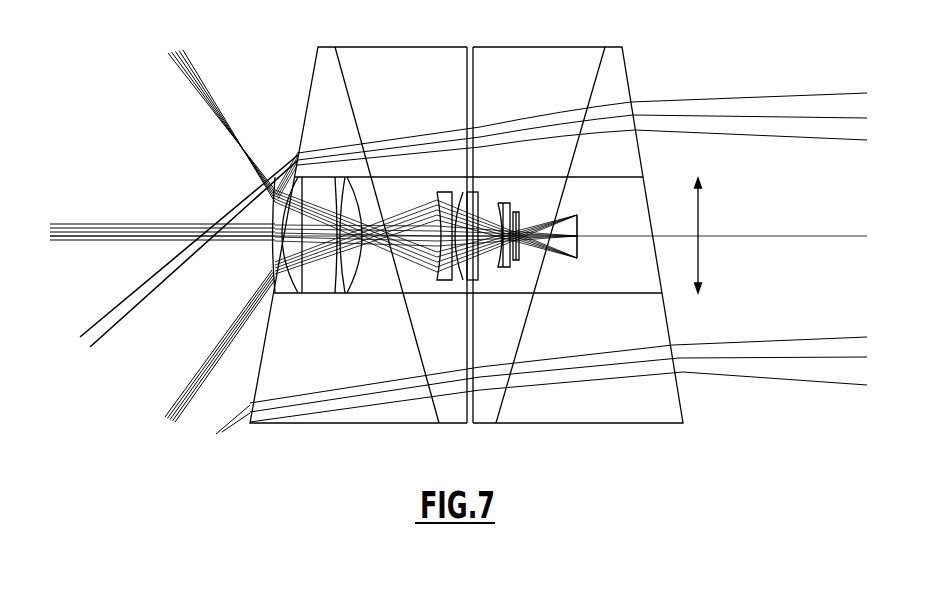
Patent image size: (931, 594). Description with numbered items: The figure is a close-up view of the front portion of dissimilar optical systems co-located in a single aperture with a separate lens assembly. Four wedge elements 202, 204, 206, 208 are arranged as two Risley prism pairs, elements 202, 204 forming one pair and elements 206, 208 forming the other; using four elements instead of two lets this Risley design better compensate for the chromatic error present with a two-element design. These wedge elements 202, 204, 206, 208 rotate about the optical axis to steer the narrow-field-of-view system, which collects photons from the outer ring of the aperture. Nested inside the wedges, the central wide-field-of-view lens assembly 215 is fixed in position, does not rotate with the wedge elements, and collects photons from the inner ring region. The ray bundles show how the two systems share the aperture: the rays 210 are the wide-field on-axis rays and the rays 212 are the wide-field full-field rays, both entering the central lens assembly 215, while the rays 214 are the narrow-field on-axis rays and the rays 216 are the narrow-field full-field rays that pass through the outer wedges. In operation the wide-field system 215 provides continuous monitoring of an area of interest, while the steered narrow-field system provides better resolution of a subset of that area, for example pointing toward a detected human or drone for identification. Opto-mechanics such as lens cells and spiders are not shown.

The wedge element 202 is at (361, 344).
The wedge element 204 is at (435, 99).
The wedge element 206 is at (545, 99).
The wedge element 208 is at (613, 344).
The WFOV on-axis rays 210 is at (114, 208).
The WFOV full-field rays 212 is at (202, 64).
The NFOV on-axis rays 214 is at (230, 436).
The WFOV lens assembly 215 is at (675, 290).
The NFOV full-field rays 216 is at (227, 412).